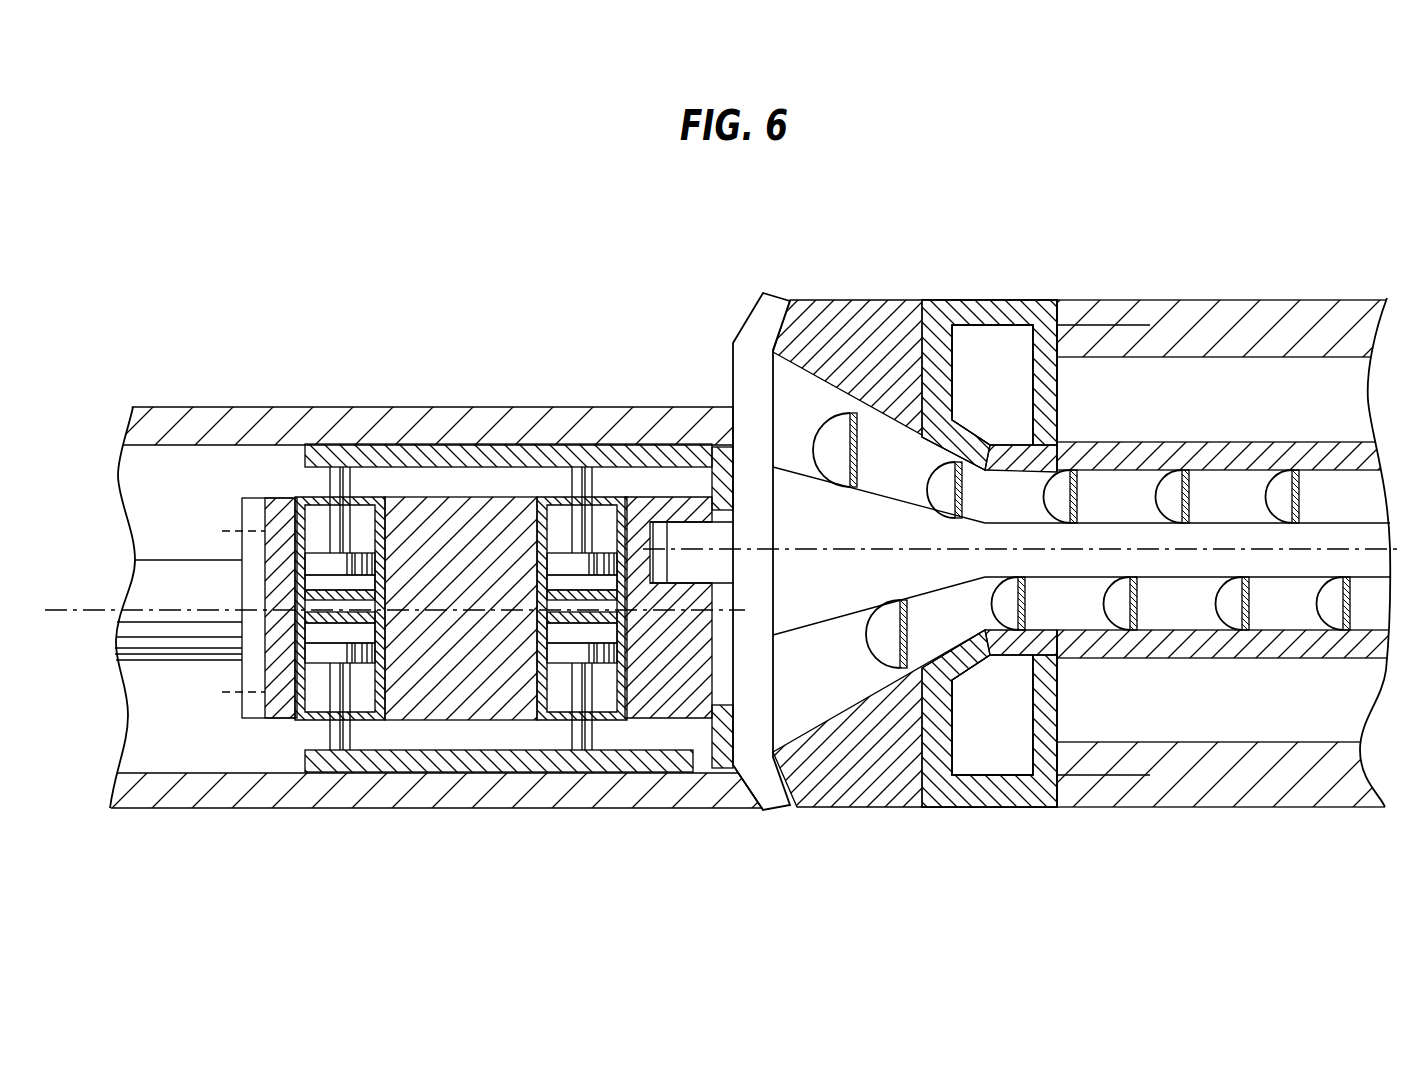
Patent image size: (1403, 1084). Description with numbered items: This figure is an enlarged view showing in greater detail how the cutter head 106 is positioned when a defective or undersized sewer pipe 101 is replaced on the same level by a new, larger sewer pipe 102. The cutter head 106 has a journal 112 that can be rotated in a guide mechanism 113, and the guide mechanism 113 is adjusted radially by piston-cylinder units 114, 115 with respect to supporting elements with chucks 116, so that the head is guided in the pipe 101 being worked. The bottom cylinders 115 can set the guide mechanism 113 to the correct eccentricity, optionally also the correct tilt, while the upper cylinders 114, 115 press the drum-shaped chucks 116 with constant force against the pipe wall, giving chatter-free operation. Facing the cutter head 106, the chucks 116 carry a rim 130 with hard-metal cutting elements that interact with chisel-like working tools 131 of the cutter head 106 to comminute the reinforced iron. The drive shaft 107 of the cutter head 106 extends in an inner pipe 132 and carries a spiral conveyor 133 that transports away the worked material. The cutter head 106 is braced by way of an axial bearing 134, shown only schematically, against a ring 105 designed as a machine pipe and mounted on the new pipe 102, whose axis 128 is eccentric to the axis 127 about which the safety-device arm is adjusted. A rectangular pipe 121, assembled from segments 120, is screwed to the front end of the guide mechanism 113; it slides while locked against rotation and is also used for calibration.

The sewer pipe 101 is at (325, 428).
The new sewer pipe 102 is at (1232, 322).
The ring 105 is at (985, 312).
The cutter head 106 is at (746, 281).
The drive shaft 107 is at (1118, 545).
The journal 112 is at (702, 532).
The guide mechanism 113 is at (496, 422).
The piston-cylinder unit 114 is at (346, 740).
The piston-cylinder unit 115 is at (283, 525).
The chucks 116 is at (612, 455).
The segments 120 is at (213, 578).
The rectangular pipe 121 is at (162, 535).
The axis 127 is at (428, 543).
The axis of new pipe 128 is at (822, 548).
The rim 130 is at (720, 755).
The working tools 131 is at (758, 775).
The inner pipe 132 is at (1210, 648).
The spiral conveyor 133 is at (1112, 600).
The axial bearing 134 is at (932, 348).